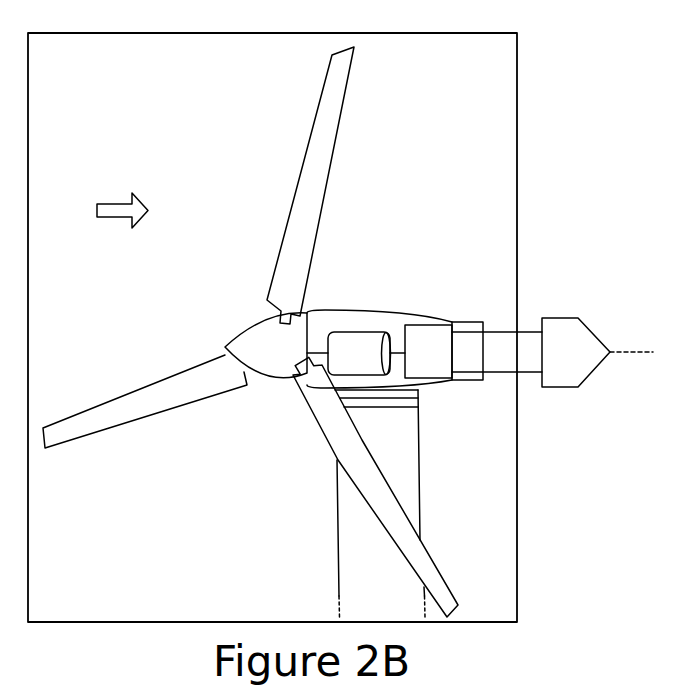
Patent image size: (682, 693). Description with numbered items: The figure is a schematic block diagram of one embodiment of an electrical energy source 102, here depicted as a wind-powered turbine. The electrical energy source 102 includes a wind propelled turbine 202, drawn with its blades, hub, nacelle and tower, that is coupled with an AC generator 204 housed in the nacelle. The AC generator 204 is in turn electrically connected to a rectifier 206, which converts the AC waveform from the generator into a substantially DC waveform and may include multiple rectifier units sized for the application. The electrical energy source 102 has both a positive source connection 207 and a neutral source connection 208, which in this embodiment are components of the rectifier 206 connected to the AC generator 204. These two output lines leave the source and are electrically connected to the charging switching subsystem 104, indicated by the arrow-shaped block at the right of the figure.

The electrical energy source 102 is at (475, 81).
The wind propelled turbine 202 is at (290, 360).
The AC generator 204 is at (373, 360).
The rectifier 206 is at (445, 363).
The positive source connection 207 is at (441, 331).
The neutral source connection 208 is at (442, 374).
The charging switching subsystem 104 is at (597, 352).